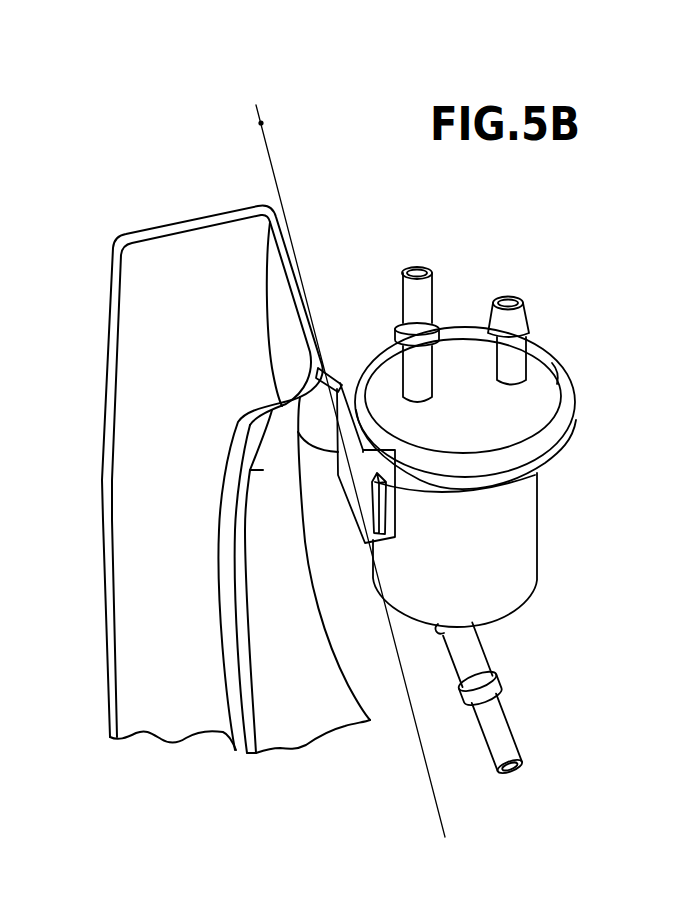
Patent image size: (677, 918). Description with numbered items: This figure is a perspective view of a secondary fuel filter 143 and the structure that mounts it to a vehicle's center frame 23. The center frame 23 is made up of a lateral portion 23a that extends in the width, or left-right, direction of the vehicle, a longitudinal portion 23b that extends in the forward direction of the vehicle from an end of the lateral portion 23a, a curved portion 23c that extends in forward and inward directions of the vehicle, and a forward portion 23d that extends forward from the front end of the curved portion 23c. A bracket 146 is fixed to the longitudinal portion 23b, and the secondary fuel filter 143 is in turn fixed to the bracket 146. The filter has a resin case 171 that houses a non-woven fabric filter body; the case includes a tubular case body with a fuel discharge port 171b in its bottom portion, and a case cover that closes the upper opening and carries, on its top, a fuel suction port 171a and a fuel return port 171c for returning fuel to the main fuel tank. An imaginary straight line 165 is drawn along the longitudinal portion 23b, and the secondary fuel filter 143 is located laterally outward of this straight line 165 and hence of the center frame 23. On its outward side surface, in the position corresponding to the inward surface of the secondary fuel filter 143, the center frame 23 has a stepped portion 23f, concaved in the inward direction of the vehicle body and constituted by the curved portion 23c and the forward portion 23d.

The center frame 23 is at (247, 455).
The lateral portion 23a is at (165, 262).
The longitudinal portion 23b is at (283, 295).
The curved portion 23c is at (330, 705).
The forward portion 23d is at (227, 582).
The stepped portion 23f is at (285, 719).
The imaginary straight line 165 is at (262, 122).
The bracket 146 is at (325, 375).
The secondary fuel filter 143 is at (505, 504).
The case 171 is at (553, 558).
The fuel suction port 171a is at (427, 295).
The fuel discharge port 171b is at (498, 720).
The fuel return port 171c is at (520, 322).